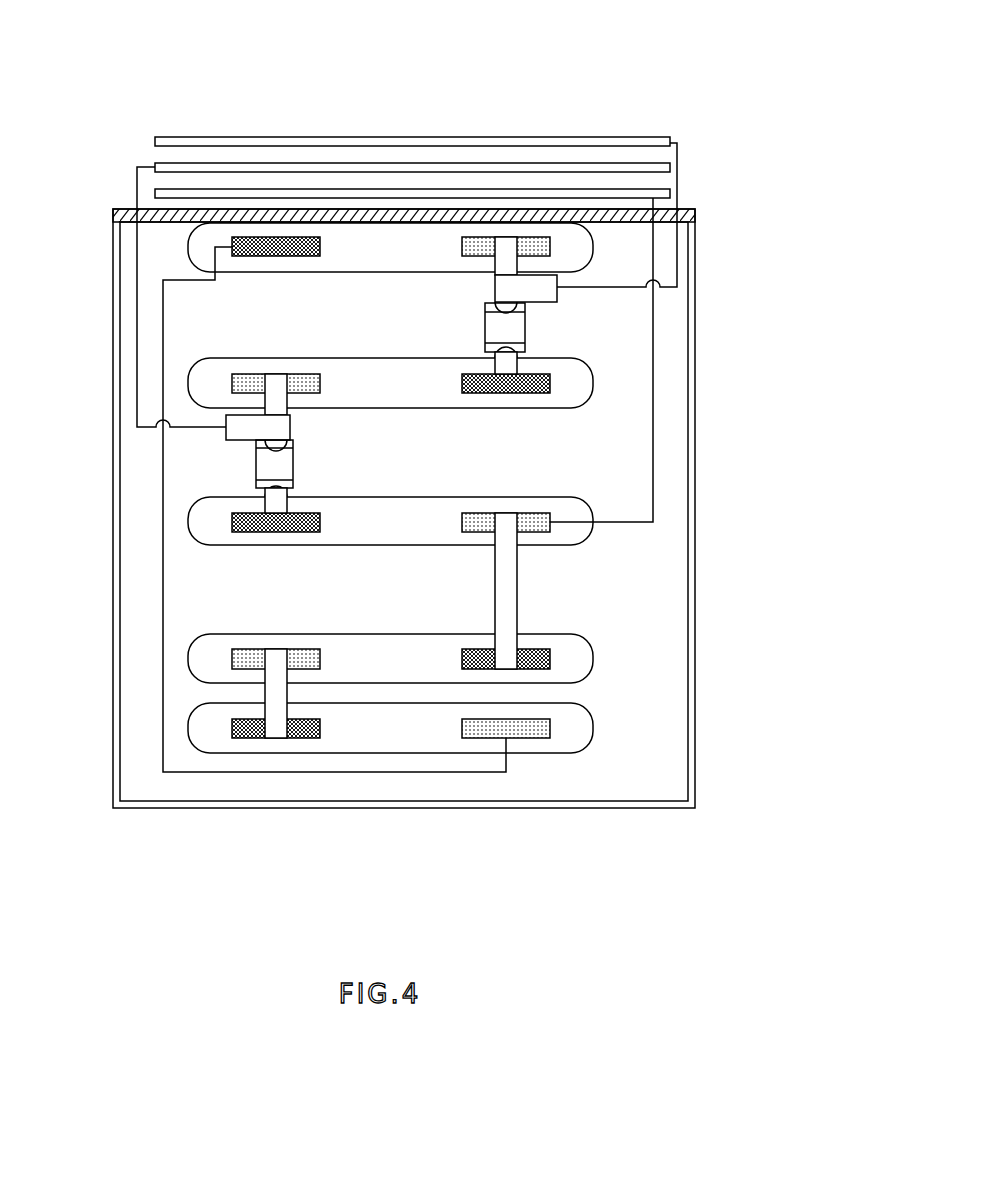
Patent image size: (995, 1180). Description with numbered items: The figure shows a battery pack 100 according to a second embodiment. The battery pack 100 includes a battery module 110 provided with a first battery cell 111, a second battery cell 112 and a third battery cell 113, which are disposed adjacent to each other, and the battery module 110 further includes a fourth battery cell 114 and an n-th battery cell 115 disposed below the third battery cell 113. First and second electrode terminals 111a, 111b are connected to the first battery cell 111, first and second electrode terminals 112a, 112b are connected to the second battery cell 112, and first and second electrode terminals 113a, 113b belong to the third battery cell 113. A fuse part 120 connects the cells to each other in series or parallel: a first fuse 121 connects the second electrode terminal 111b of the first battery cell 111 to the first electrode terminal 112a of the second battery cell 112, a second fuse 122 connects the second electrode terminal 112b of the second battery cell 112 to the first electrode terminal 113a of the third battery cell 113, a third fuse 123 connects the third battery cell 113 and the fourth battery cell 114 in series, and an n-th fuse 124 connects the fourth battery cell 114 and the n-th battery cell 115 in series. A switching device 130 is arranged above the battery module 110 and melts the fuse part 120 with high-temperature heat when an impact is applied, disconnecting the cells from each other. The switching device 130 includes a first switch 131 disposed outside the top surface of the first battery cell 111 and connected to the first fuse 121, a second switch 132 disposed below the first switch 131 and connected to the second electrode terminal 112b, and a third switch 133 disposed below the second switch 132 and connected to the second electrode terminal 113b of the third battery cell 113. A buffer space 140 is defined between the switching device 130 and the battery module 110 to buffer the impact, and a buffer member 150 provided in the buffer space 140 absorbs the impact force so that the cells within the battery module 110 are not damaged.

The battery pack 100 is at (623, 72).
The battery module 110 is at (688, 729).
The first battery cell 111 is at (320, 267).
The first electrode terminal 111a is at (275, 257).
The second electrode terminal 111b is at (474, 257).
The second battery cell 112 is at (320, 384).
The first electrode terminal 112a is at (477, 393).
The second electrode terminal 112b is at (302, 374).
The third battery cell 113 is at (320, 543).
The first electrode terminal 113a is at (255, 532).
The second electrode terminal 113b is at (473, 532).
The fourth battery cell 114 is at (188, 658).
The n-th battery cell 115 is at (188, 728).
The fuse part 120 is at (758, 328).
The first fuse 121 is at (525, 327).
The second fuse 122 is at (293, 463).
The third fuse 123 is at (517, 596).
The n-th fuse 124 is at (287, 697).
The switching device 130 is at (335, 52).
The first switch 131 is at (221, 137).
The second switch 132 is at (275, 163).
The third switch 133 is at (330, 189).
The buffer space 140 is at (662, 204).
The buffer member 150 is at (695, 214).